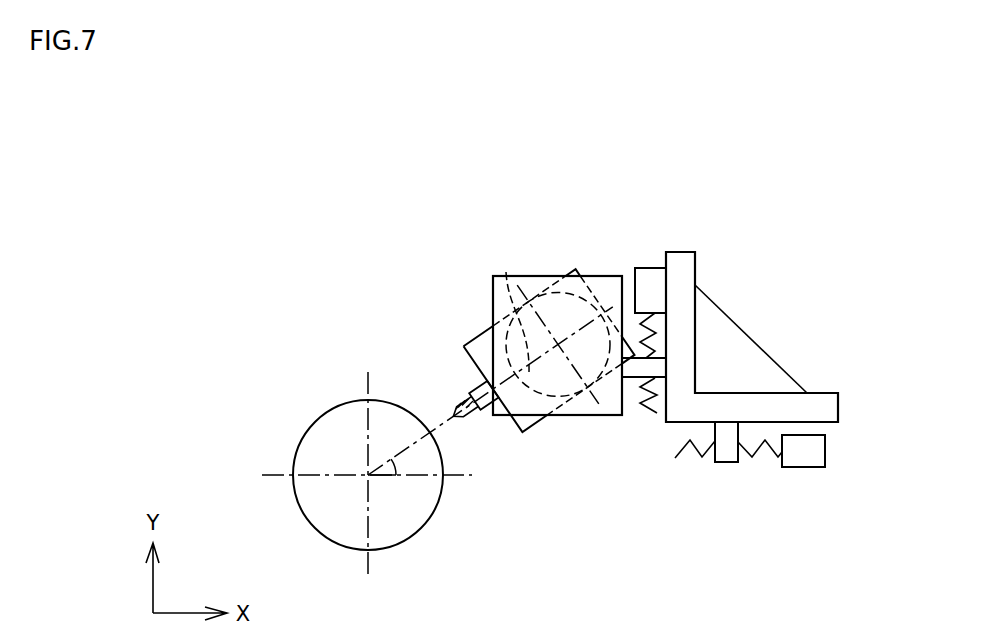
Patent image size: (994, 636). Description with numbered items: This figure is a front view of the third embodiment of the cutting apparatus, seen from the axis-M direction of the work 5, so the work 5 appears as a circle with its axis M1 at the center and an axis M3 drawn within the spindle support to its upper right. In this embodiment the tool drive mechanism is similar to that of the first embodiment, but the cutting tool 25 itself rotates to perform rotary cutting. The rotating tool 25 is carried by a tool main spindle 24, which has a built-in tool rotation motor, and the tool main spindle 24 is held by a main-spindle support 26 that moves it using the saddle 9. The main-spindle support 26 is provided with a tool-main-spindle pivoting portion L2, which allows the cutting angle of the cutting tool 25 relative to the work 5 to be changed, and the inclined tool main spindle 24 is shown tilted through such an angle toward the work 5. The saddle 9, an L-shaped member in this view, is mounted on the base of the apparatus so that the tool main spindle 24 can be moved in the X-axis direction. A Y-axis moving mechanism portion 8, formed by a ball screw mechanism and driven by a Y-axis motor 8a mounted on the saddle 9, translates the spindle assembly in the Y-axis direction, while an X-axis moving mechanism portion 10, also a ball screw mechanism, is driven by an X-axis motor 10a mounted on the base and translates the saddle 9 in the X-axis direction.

The work 5 is at (412, 536).
The mirror M1 (rotation center) M1 is at (366, 473).
The tool-main-spindle pivoting portion L2 is at (568, 403).
The tool main spindle 24 is at (482, 334).
The rotating tool 25 is at (470, 392).
The main-spindle support 26 is at (552, 276).
The mirror M3 is at (506, 272).
The Y-axis motor 8a is at (647, 268).
The saddle 9 is at (820, 400).
The Y-axis moving mechanism portion 8 is at (645, 474).
The X-axis moving mechanism portion 10 is at (724, 520).
The X-axis motor 10a is at (800, 456).